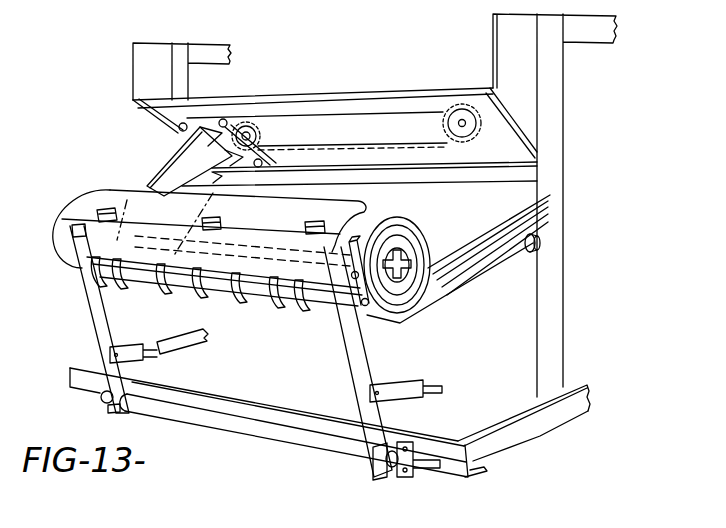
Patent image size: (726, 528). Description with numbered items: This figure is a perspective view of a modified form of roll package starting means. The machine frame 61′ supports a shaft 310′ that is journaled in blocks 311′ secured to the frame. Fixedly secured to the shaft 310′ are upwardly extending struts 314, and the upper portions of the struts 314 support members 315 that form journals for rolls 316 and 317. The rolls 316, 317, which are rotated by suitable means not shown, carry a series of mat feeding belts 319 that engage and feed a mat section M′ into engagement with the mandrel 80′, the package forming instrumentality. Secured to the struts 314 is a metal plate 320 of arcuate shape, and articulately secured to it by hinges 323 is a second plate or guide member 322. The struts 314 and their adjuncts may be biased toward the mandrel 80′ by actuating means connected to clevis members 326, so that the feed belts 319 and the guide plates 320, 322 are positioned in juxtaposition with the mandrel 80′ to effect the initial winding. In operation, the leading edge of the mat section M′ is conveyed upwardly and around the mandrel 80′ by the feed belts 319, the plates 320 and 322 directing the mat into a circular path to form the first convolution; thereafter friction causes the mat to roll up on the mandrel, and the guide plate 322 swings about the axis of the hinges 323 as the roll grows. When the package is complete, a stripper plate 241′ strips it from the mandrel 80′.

The machine frame 61′ is at (563, 148).
The stripper plate 241′ is at (175, 163).
The guide member 322 is at (127, 192).
The hinges 323 is at (100, 212).
The metal plate 320 is at (82, 247).
The mat feeding belts 319 is at (233, 295).
The roll 316 is at (263, 300).
The roll 317 is at (303, 307).
The mandrel 80′ is at (407, 248).
The mat section M′ is at (476, 246).
The members 315 is at (347, 331).
The struts 314 is at (97, 307).
The clevis members 326 is at (138, 336).
The shaft 310′ is at (267, 434).
The blocks 311′ is at (107, 399).